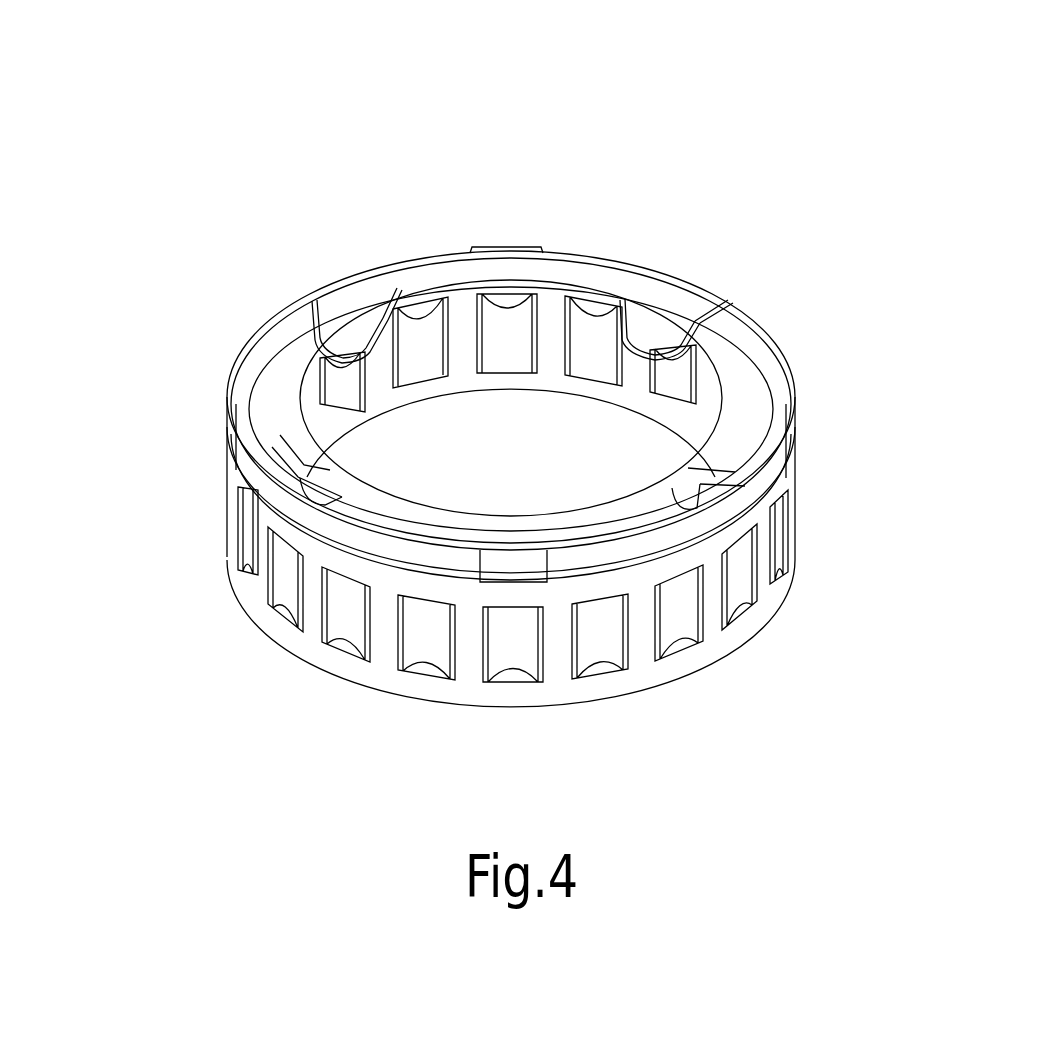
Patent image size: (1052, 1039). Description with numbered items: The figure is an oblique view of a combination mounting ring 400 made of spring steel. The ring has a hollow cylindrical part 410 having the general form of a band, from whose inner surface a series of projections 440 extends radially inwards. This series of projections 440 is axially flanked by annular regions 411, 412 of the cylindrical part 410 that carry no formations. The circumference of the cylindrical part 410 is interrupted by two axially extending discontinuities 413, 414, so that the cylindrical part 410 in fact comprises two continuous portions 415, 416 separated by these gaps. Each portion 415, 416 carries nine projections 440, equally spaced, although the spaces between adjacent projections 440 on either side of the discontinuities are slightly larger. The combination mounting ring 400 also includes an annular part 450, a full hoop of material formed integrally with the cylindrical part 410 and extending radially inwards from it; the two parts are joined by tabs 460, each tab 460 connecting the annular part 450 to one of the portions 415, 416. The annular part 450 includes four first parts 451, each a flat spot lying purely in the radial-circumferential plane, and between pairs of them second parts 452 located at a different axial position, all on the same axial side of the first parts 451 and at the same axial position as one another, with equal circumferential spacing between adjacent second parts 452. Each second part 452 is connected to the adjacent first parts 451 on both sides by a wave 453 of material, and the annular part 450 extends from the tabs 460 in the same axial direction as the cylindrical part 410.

The combination mounting ring 400 is at (218, 73).
The hollow cylindrical part 410 is at (362, 576).
The annular region 411 is at (604, 686).
The annular region 412 is at (689, 562).
The axially extending discontinuity 413 is at (794, 401).
The axially extending discontinuity 414 is at (229, 411).
The continuous portion 415 is at (658, 397).
The continuous portion 416 is at (784, 580).
The projection 440 is at (589, 335).
The annular part 450 is at (299, 471).
The first part 451 is at (274, 388).
The second part 452 is at (351, 346).
The wave 453 is at (359, 353).
The tab 460 is at (506, 245).